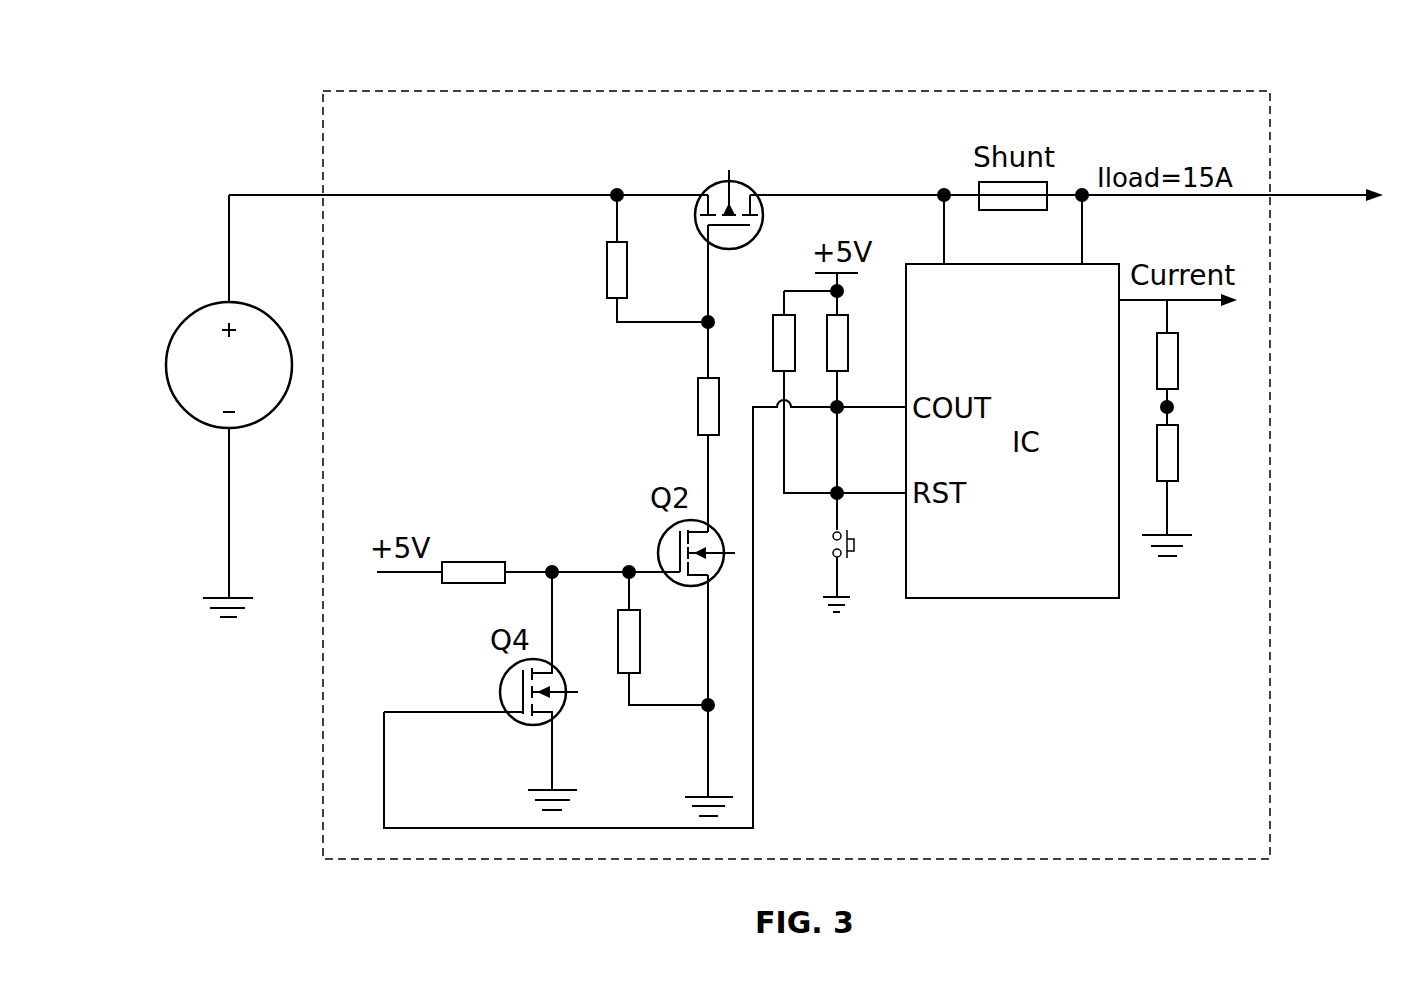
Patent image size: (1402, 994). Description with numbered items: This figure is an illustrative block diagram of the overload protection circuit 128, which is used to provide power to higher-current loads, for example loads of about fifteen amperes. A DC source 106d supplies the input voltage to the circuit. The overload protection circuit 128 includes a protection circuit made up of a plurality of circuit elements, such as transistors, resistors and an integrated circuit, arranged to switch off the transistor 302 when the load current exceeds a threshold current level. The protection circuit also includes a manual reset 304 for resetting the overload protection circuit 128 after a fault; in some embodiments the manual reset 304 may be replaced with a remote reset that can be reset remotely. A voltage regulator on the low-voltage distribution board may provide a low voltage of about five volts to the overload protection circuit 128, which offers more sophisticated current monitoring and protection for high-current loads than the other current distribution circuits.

The overload protection circuit 128 is at (252, 50).
The DC power source 106d is at (203, 308).
The transistor 302 is at (730, 122).
The manual reset 304 is at (850, 567).